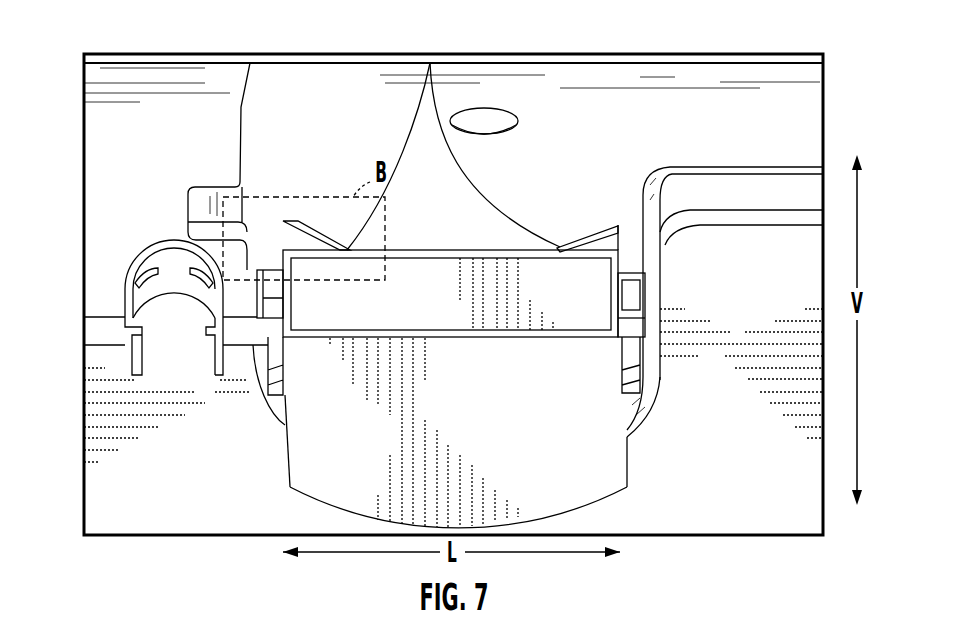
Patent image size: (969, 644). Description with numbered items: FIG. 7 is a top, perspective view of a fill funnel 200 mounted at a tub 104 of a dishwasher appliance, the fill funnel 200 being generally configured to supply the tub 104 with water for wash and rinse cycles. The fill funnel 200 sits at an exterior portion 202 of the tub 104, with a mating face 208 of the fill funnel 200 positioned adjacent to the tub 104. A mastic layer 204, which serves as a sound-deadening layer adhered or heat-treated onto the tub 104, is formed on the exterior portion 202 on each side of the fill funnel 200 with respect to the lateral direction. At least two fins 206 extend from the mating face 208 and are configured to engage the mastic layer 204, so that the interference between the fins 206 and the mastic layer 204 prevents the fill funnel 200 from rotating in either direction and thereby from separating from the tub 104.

The tub 104 is at (560, 197).
The fill funnel 200 is at (475, 410).
The exterior portion 202 is at (560, 99).
The mastic layer 204 is at (165, 150).
The fins 206 is at (429, 63).
The mating face 208 is at (441, 245).